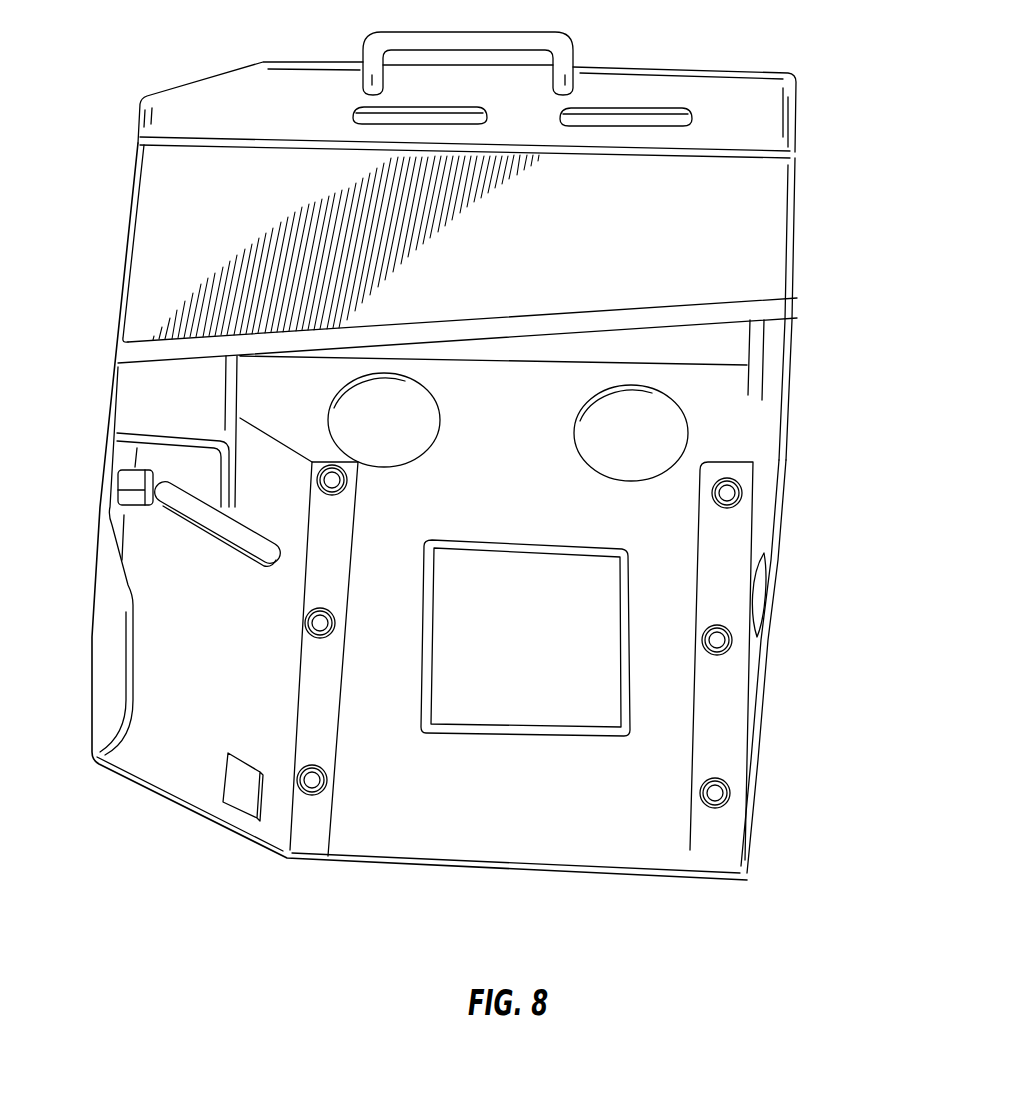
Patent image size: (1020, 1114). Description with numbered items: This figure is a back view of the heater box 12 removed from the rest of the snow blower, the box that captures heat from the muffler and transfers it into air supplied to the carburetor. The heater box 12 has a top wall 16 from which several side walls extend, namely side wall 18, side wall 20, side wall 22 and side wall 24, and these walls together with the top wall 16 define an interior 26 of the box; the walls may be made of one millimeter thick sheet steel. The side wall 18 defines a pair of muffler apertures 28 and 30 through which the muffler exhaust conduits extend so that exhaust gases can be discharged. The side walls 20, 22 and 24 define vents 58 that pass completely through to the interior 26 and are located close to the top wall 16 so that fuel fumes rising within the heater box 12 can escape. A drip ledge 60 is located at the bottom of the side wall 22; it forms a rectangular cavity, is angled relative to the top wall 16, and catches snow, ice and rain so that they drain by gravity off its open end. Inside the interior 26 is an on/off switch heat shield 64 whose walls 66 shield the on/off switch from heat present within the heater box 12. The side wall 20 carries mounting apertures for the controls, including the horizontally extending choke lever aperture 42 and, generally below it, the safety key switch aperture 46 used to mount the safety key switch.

The heater box 12 is at (163, 290).
The top wall 16 is at (720, 74).
The side wall 18 is at (531, 798).
The side wall 20 is at (226, 623).
The side wall 22 is at (528, 254).
The side wall 24 is at (790, 462).
The interior 26 is at (718, 366).
The muffler aperture 28 is at (648, 455).
The muffler aperture 30 is at (406, 437).
The choke lever aperture 42 is at (237, 537).
The safety key switch aperture 46 is at (243, 797).
The vents 58 is at (413, 117).
The drip ledge 60 is at (750, 287).
The on/off switch heat shield 64 is at (153, 412).
The walls 66 is at (207, 413).